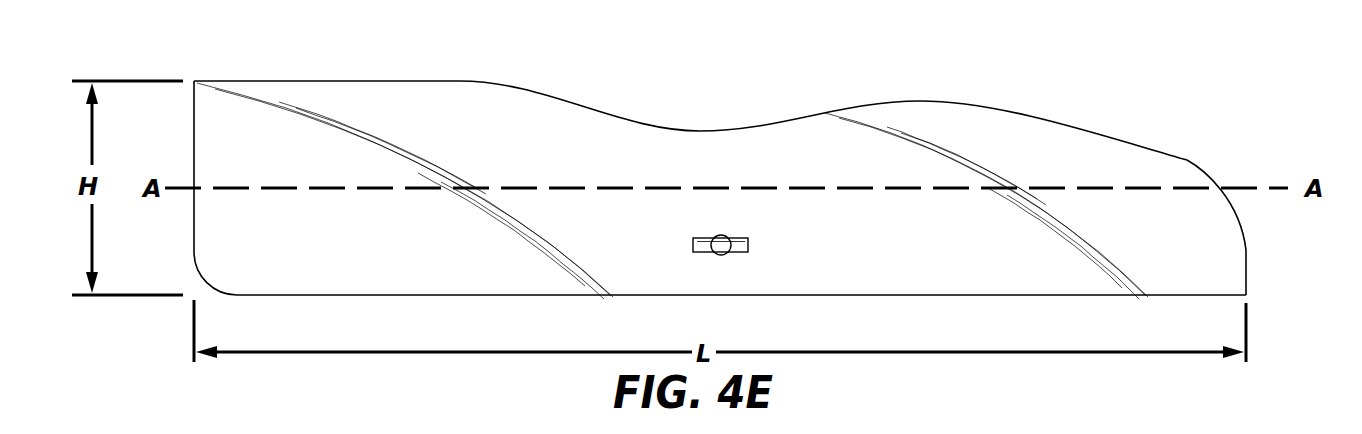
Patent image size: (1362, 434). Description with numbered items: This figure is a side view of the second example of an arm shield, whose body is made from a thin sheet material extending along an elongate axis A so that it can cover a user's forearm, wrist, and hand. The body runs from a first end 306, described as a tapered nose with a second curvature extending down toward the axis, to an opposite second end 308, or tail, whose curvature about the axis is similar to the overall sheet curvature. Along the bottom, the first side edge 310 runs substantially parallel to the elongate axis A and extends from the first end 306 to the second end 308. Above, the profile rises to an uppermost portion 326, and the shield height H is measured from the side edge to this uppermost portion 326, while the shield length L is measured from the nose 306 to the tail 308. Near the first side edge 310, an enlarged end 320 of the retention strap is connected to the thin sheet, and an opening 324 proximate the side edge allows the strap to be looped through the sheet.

The first end 306 is at (1227, 250).
The second end 308 is at (212, 148).
The first side edge 310 is at (635, 296).
The end of retention strap 320 is at (740, 249).
The opening 324 is at (736, 222).
The uppermost portion 326 is at (388, 81).